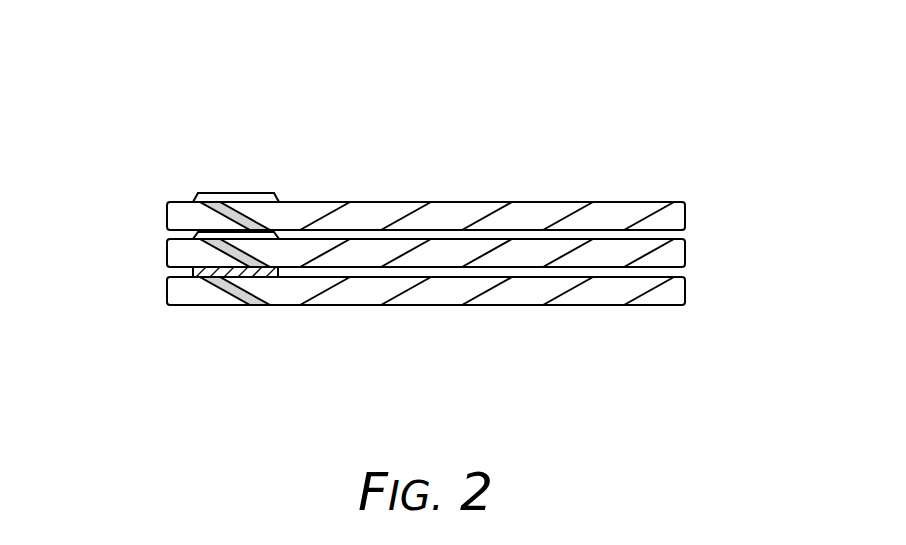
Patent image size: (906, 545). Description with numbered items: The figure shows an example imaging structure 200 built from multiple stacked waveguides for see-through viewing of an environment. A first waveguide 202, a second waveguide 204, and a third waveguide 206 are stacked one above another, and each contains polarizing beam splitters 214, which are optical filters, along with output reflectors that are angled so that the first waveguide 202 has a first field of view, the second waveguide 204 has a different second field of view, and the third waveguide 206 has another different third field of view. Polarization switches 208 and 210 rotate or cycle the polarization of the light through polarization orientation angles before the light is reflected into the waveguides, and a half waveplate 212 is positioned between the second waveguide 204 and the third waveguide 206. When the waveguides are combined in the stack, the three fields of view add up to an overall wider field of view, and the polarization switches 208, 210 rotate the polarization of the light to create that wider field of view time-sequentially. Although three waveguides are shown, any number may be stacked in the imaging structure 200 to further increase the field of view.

The imaging structure 200 is at (652, 78).
The first waveguide 202 is at (625, 202).
The second waveguide 204 is at (686, 240).
The third waveguide 206 is at (606, 305).
The polarization switch 208 is at (213, 197).
The polarization switch 210 is at (200, 236).
The half waveplate 212 is at (198, 270).
The polarizing beam splitters 214 is at (252, 221).